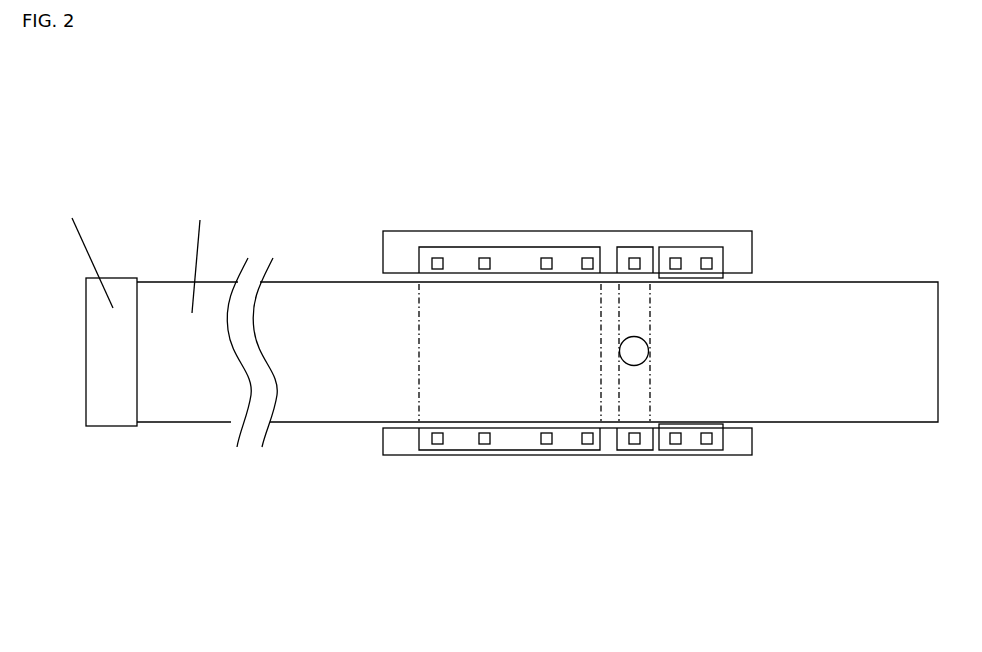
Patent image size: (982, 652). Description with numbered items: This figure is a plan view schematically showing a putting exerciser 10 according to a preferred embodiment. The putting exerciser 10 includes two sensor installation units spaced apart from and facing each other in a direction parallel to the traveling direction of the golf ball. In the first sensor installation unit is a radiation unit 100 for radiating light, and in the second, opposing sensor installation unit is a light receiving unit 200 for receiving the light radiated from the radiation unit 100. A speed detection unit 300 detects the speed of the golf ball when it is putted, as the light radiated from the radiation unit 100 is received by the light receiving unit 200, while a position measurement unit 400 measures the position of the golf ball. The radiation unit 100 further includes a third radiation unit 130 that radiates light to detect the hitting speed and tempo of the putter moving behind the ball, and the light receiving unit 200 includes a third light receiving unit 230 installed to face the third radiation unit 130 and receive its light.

The putting exerciser 10 is at (56, 130).
The radiation unit 100 is at (399, 231).
The third radiation unit 130 is at (703, 247).
The light receiving unit 200 is at (400, 456).
The third light receiving unit 230 is at (702, 451).
The speed detection unit 300 is at (520, 247).
The position measurement unit 400 is at (634, 247).